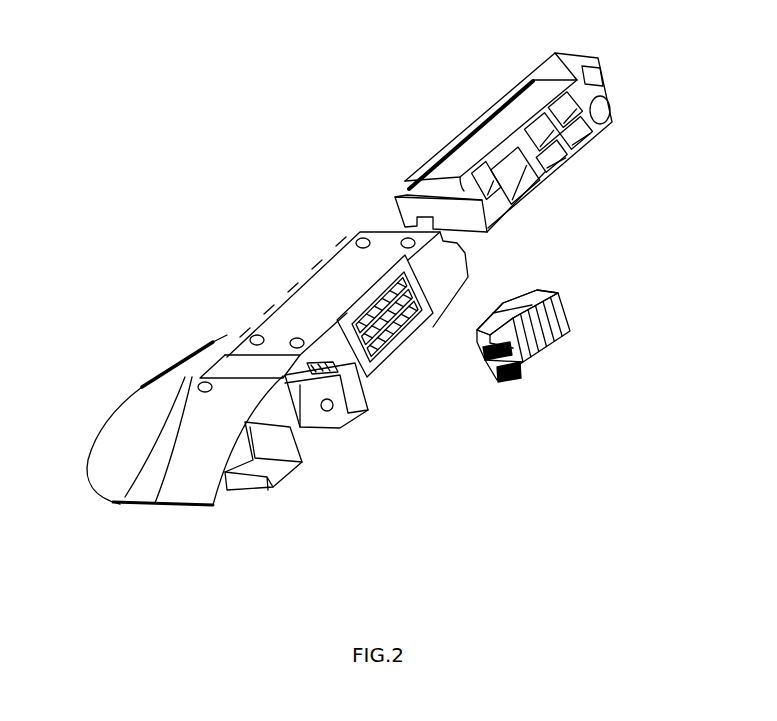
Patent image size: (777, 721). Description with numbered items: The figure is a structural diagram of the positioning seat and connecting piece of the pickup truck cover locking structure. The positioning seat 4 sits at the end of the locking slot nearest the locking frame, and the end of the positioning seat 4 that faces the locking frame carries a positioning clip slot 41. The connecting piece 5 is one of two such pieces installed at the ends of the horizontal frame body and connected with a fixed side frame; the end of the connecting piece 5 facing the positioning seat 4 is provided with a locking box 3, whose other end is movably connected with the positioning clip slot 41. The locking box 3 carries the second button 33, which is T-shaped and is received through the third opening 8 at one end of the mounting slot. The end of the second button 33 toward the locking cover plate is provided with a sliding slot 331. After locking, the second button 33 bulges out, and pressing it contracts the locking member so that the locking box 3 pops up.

The locking box 3 is at (332, 292).
The positioning seat 4 is at (499, 118).
The connecting piece 5 is at (137, 440).
The third opening 8 is at (394, 356).
The second button 33 is at (592, 373).
The sliding slot 331 is at (523, 305).
The positioning clip slot 41 is at (470, 198).